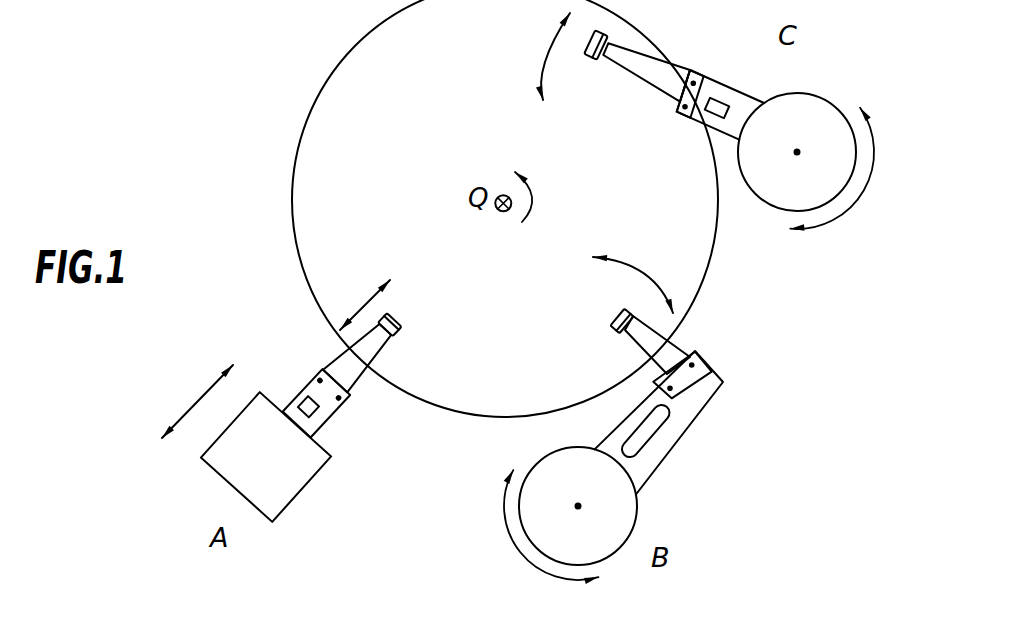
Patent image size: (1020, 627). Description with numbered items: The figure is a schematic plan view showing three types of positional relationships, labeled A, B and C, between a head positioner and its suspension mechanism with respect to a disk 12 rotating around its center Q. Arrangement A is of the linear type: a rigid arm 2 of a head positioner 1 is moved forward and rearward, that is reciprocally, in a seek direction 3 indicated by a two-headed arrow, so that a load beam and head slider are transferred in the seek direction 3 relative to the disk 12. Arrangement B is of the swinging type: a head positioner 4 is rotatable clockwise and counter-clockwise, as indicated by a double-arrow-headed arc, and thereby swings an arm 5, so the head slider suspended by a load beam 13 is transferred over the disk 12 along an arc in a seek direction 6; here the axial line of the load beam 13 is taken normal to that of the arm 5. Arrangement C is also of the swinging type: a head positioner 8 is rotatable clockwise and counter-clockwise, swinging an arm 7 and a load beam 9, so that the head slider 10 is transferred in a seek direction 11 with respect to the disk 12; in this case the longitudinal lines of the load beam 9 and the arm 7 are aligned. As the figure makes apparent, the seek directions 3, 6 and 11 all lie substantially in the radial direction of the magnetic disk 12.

The head positioner 1 is at (305, 491).
The rigid arm 2 is at (334, 414).
The seek direction 3 is at (364, 297).
The head positioner 4 is at (645, 513).
The arm 5 is at (708, 392).
The seek direction 6 is at (641, 270).
The arm 7 is at (695, 124).
The head positioner 8 is at (836, 97).
The load beam 9 is at (637, 74).
The head slider 10 is at (592, 55).
The seek direction 11 is at (543, 64).
The disk 12 is at (310, 110).
The load beam 13 is at (638, 345).